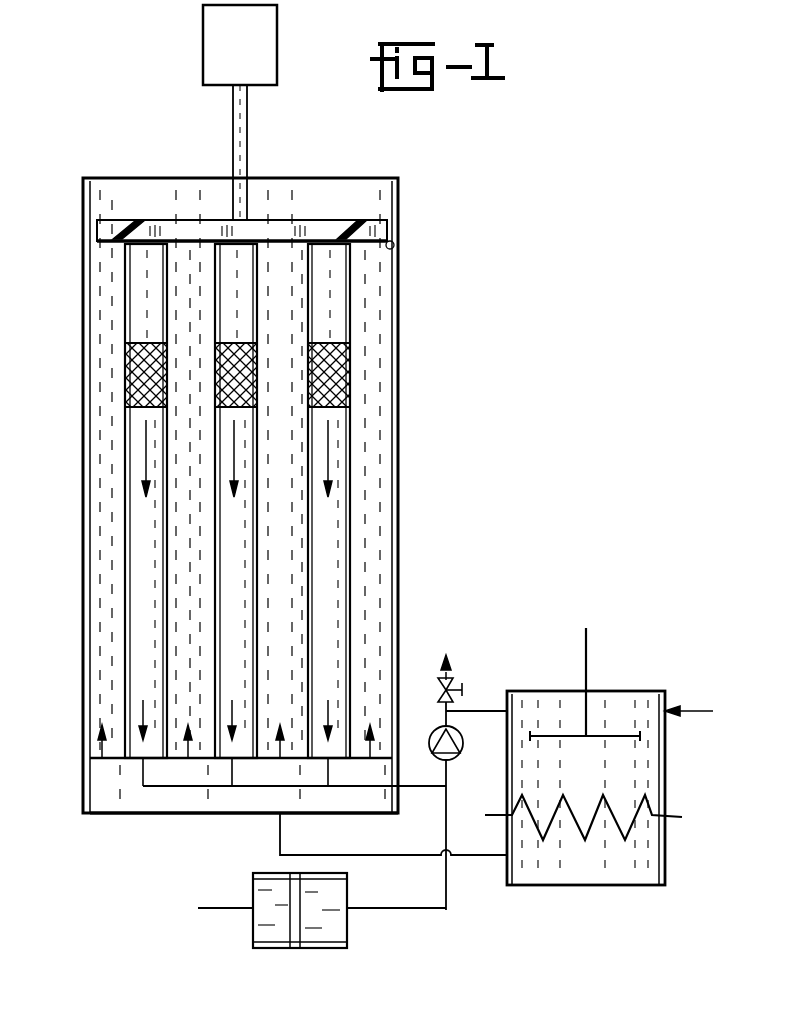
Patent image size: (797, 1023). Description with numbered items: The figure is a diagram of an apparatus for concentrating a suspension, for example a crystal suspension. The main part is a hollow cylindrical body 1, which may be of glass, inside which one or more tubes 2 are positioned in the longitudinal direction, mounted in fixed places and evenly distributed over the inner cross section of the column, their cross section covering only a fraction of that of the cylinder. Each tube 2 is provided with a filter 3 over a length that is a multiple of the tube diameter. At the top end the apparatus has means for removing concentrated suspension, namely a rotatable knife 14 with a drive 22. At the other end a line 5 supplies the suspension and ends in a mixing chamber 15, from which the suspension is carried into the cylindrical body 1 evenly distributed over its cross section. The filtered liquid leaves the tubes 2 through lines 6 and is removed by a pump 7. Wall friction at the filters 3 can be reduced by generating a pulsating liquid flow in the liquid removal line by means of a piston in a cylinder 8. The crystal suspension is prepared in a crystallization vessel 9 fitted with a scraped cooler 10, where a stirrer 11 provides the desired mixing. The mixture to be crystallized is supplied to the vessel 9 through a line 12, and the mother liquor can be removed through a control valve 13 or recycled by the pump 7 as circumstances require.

The hollow cylindrical body 1 is at (85, 462).
The tube 2 is at (147, 557).
The filter 3 is at (127, 371).
The line 5 is at (393, 857).
The line 6 is at (188, 787).
The pump 7 is at (448, 748).
The cylinder 8 is at (322, 950).
The crystallization vessel 9 is at (585, 880).
The scraped cooler 10 is at (666, 797).
The stirrer 11 is at (588, 675).
The line 12 is at (705, 713).
The control valve 13 is at (448, 682).
The rotatable knife 14 is at (178, 218).
The mixing chamber 15 is at (128, 797).
The drive 22 is at (222, 63).